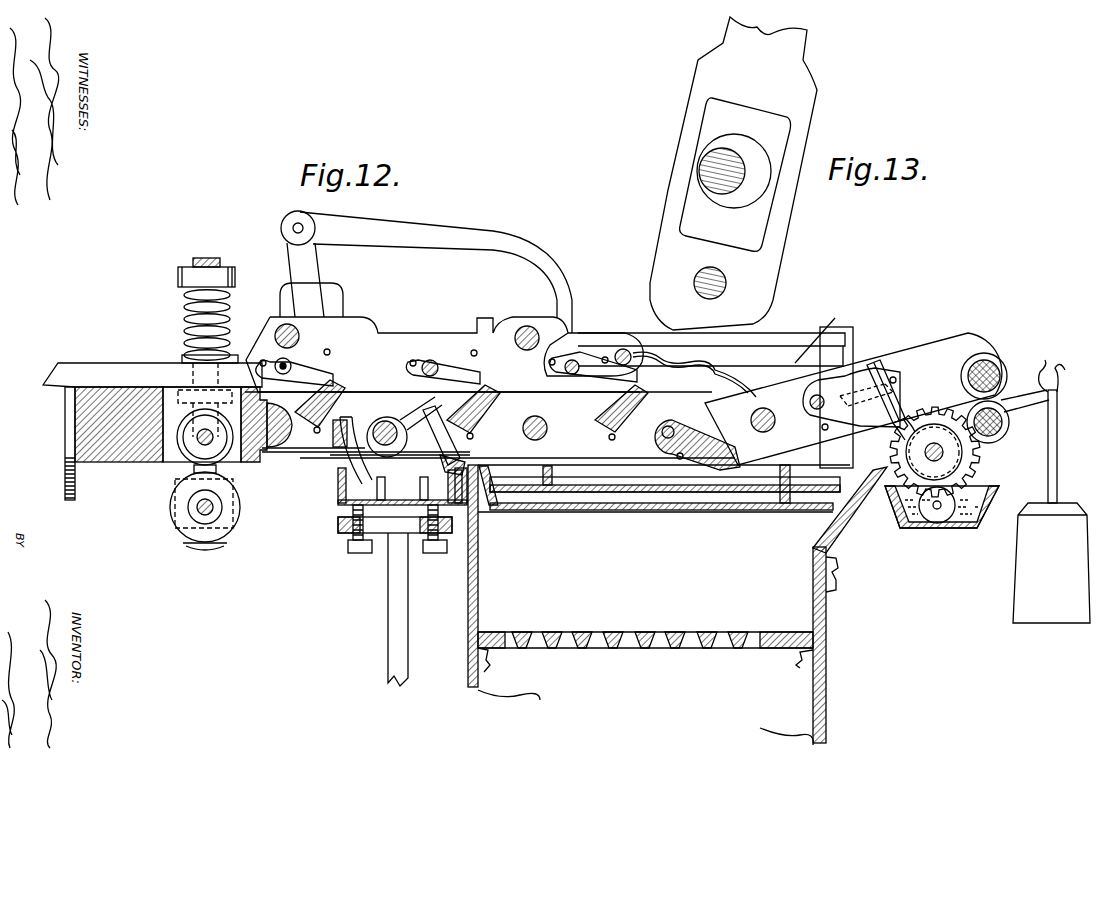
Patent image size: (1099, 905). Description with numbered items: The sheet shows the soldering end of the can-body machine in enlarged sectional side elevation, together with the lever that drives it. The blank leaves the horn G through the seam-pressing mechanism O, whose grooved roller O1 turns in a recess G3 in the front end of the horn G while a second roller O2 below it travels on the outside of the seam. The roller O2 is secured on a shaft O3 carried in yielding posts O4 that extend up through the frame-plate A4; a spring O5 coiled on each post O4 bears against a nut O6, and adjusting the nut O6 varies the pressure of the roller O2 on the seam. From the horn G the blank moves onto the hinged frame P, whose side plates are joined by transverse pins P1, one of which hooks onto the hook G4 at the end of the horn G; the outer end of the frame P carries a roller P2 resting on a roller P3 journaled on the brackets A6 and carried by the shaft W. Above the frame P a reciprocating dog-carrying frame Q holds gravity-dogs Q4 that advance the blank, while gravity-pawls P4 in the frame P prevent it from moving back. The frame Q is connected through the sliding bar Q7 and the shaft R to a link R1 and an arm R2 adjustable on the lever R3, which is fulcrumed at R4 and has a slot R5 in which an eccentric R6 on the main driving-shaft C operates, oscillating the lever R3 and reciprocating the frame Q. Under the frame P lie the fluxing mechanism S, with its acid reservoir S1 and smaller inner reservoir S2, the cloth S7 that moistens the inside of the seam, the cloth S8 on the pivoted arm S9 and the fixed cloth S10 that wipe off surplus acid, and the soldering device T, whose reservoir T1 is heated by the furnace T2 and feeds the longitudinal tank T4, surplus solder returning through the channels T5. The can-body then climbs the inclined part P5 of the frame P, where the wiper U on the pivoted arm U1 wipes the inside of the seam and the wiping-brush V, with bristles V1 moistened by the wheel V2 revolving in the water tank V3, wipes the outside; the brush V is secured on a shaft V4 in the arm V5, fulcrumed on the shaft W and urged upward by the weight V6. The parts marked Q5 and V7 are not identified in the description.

In FIG. 12, the frame-plate A4 is at (83, 372).
In FIG. 12, the brackets A6 is at (852, 389).
In FIG. 13, the main driving-shaft C is at (718, 171).
In FIG. 12, the horn G is at (118, 452).
In FIG. 12, the recess G3 is at (178, 392).
In FIG. 12, the hook G4 is at (282, 446).
In FIG. 12, the seam-pressing mechanism O is at (153, 507).
In FIG. 12, the grooved roller O1 is at (190, 438).
In FIG. 12, the second roller O2 is at (233, 511).
In FIG. 12, the shaft O3 is at (200, 512).
In FIG. 12, the yielding posts O4 is at (233, 458).
In FIG. 12, the spring O5 is at (228, 318).
In FIG. 12, the nut O6 is at (236, 284).
In FIG. 12, the frame P is at (490, 425).
In FIG. 12, the transverse pins P1 is at (282, 432).
In FIG. 12, the roller P2 is at (1008, 362).
In FIG. 12, the roller P3 is at (1012, 436).
In FIG. 12, the gravity-pawls P4 is at (337, 404).
In FIG. 12, the inclined part P5 is at (908, 366).
In FIG. 12, the dog-carrying frame Q is at (444, 347).
In FIG. 12, the gravity-dogs Q4 is at (306, 368).
In FIG. 12, the spring Q5 is at (732, 378).
In FIG. 12, the longitudinally-extending bar Q7 is at (824, 326).
In FIG. 12, the shaft R is at (770, 350).
In FIG. 12, the link R1 is at (500, 240).
In FIG. 12, the arm R2 is at (316, 282).
In FIG. 13, the lever R3 is at (812, 90).
In FIG. 13, the fulcrum R4 is at (726, 283).
In FIG. 13, the slot R5 is at (775, 137).
In FIG. 13, the eccentric R6 is at (753, 196).
In FIG. 12, the fluxing mechanism S is at (393, 570).
In FIG. 12, the reservoir S1 is at (350, 500).
In FIG. 12, the second smaller reservoir S2 is at (402, 487).
In FIG. 12, the piece of cloth S7 is at (352, 472).
In FIG. 12, the piece of cloth S8 is at (466, 458).
In FIG. 12, the arm S9 is at (404, 421).
In FIG. 12, the fixed piece of cloth S10 is at (482, 506).
In FIG. 12, the soldering device T is at (838, 578).
In FIG. 12, the reservoir T1 is at (672, 506).
In FIG. 12, the furnace T2 is at (677, 605).
In FIG. 12, the longitudinal tank T4 is at (600, 498).
In FIG. 12, the transversely-extending channels T5 is at (530, 498).
In FIG. 12, the wiper U is at (897, 400).
In FIG. 12, the arm U1 is at (857, 400).
In FIG. 12, the wiping-brush V is at (892, 447).
In FIG. 12, the bristles V1 is at (976, 456).
In FIG. 12, the wheel V2 is at (962, 530).
In FIG. 12, the tank V3 is at (986, 516).
In FIG. 12, the shaft V4 is at (936, 456).
In FIG. 12, the arm V5 is at (1008, 410).
In FIG. 12, the weight V6 is at (1051, 563).
In FIG. 12, the chute V7 is at (878, 520).
In FIG. 12, the shaft W is at (1012, 430).